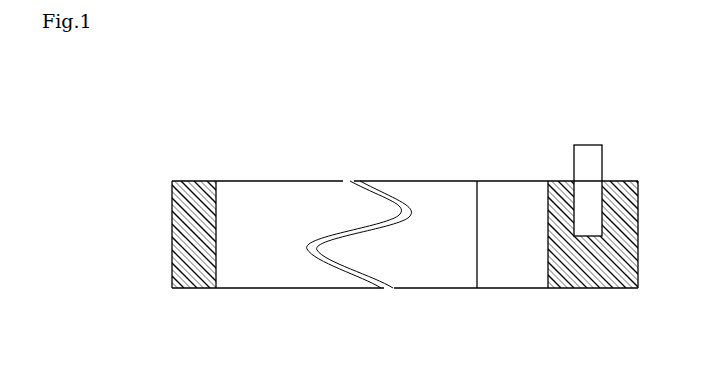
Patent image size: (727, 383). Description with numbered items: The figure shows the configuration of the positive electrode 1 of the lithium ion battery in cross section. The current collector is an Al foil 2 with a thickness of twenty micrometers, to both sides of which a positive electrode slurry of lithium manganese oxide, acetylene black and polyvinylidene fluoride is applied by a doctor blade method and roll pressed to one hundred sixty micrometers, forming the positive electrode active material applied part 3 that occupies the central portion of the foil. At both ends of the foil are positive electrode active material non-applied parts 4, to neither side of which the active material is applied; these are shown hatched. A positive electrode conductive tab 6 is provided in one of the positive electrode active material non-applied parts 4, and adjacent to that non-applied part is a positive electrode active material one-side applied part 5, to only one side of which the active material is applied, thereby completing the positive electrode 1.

The positive electrode 1 is at (81, 208).
The Al foil 2 is at (415, 178).
The positive electrode active material applied part 3 is at (270, 207).
The positive electrode active material non-applied part 4 is at (188, 289).
The positive electrode active material one-side applied part 5 is at (518, 288).
The positive electrode conductive tab 6 is at (575, 145).